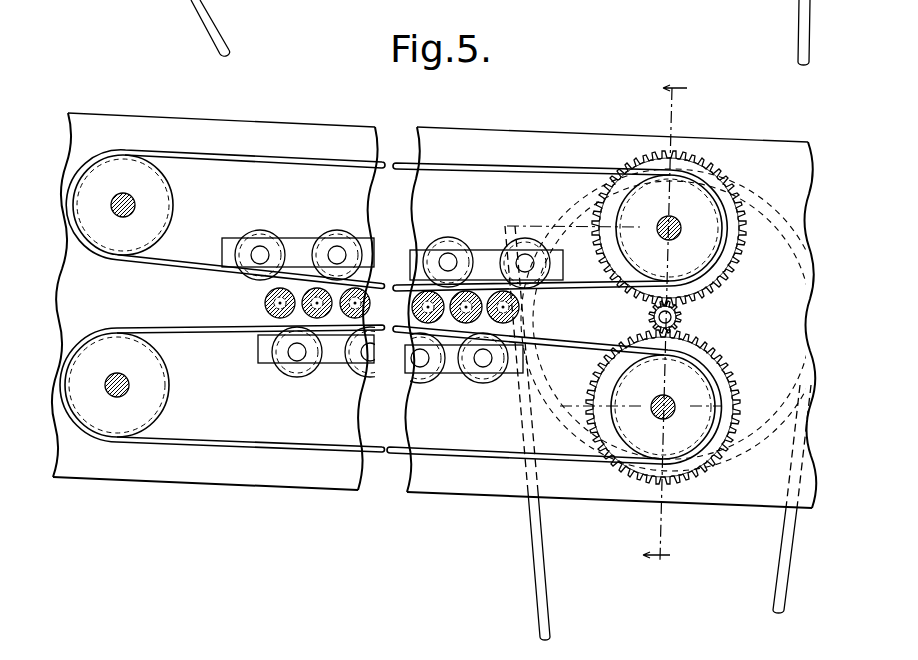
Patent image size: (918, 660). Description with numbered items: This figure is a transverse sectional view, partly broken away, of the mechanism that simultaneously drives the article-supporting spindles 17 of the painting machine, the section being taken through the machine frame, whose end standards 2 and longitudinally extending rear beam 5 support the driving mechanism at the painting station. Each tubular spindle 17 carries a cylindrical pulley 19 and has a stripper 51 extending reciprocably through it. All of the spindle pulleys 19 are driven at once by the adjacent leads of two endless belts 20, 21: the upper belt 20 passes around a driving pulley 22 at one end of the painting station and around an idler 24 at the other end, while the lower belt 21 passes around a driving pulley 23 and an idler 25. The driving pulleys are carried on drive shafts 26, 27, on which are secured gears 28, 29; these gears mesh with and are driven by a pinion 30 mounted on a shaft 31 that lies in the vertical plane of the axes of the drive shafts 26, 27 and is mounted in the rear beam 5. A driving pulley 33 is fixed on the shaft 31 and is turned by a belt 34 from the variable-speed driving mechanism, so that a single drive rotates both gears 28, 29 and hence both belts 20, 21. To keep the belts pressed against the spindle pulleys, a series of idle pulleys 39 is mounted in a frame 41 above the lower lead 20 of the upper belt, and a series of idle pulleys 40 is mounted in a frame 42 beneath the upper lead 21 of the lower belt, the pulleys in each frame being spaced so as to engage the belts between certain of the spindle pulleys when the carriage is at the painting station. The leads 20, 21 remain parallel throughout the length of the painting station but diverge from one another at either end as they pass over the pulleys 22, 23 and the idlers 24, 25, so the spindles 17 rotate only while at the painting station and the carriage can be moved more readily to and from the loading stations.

The end standards 2 is at (665, 325).
The rear beam 5 is at (414, 137).
The article-supporting spindles 17 is at (268, 300).
The cylindrical pulley 19 is at (270, 305).
The upper endless belt 20 is at (594, 284).
The lower endless belt 21 is at (556, 346).
The driving pulley 22 is at (712, 207).
The driving pulley 23 is at (715, 407).
The idler 24 is at (91, 246).
The idler 25 is at (88, 424).
The drive shaft 26 is at (681, 228).
The drive shaft 27 is at (673, 412).
The gear 28 is at (738, 245).
The gear 29 is at (725, 362).
The pinion 30 is at (677, 321).
The shaft 31 is at (677, 317).
The driving pulley 33 is at (767, 428).
The belt 34 is at (780, 560).
The idle pulleys 39 is at (328, 237).
The idle pulleys 40 is at (312, 377).
The frame 41 is at (408, 256).
The frame 42 is at (403, 385).
The stripper 51 is at (273, 312).